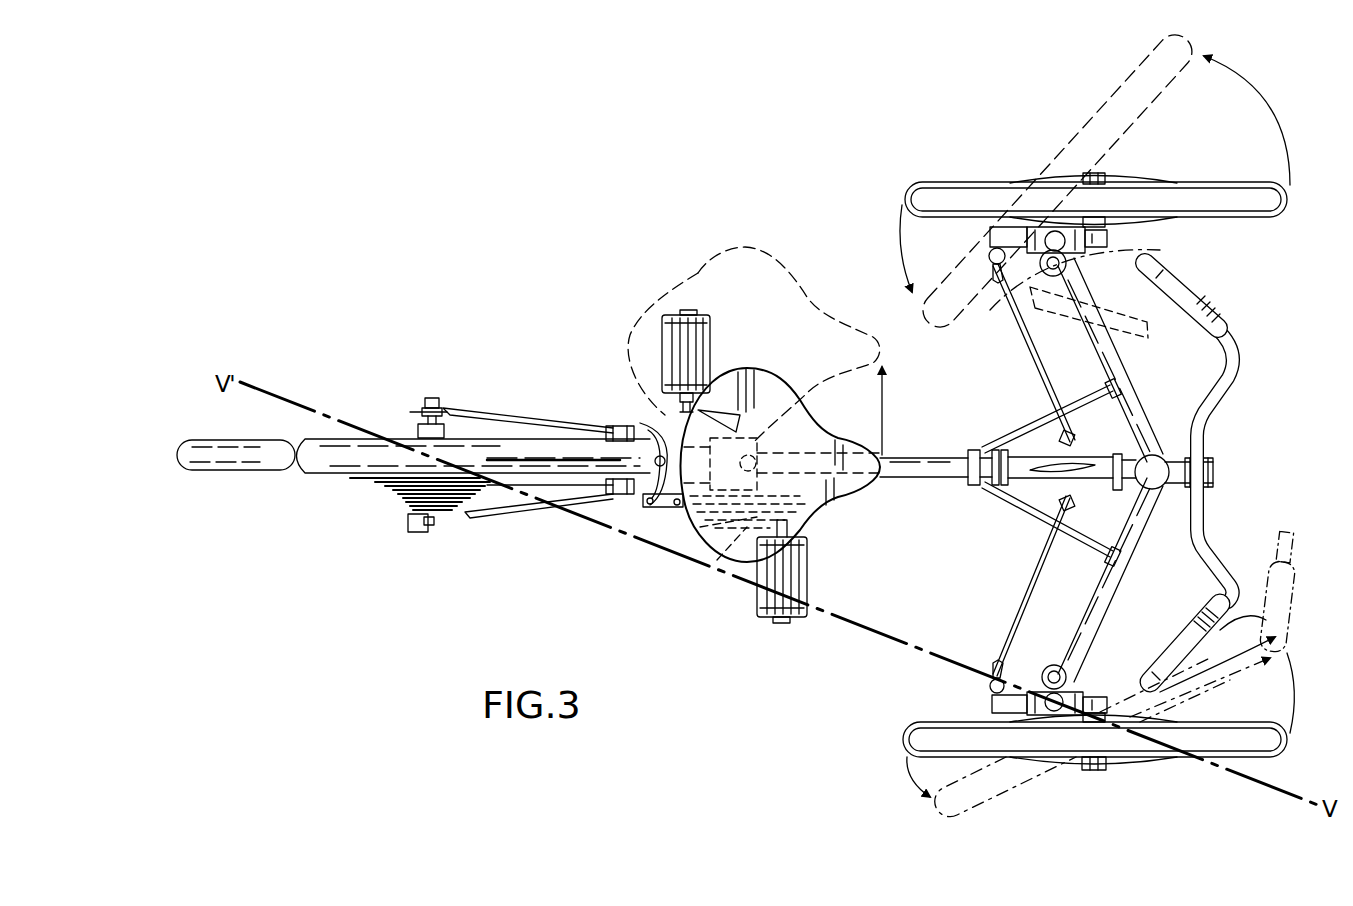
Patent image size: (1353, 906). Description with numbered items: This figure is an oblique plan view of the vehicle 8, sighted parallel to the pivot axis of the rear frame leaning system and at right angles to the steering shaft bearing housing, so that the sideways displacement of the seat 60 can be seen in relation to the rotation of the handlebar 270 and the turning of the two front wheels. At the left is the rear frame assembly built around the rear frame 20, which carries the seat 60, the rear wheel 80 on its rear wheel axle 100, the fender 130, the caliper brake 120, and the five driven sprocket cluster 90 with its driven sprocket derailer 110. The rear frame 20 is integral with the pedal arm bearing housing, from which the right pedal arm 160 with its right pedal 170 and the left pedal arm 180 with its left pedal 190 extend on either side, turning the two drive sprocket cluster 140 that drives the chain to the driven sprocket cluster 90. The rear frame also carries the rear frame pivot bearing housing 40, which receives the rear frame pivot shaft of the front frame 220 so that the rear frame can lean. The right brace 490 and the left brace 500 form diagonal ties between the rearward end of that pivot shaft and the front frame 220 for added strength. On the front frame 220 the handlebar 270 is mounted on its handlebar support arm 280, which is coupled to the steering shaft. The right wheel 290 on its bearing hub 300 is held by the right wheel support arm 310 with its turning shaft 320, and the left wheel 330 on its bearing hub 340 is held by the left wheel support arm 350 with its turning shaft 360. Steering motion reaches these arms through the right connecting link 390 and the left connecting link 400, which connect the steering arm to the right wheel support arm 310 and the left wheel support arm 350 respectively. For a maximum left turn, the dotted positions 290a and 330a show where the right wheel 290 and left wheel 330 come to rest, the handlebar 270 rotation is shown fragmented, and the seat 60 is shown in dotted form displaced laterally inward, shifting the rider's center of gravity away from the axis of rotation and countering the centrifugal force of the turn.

The vehicle 8 is at (688, 228).
The rear frame 20 is at (905, 480).
The rear frame pivot bearing housing 40 is at (1100, 458).
The seat 60 is at (840, 495).
The rear wheel 80 is at (265, 440).
The five driven sprocket cluster 90 is at (392, 490).
The rear wheel axle 100 is at (432, 402).
The driven sprocket derailer 110 is at (412, 530).
The caliper brake 120 is at (642, 422).
The fender 130 is at (318, 478).
The two drive sprocket cluster 140 is at (700, 512).
The right pedal arm 160 is at (706, 562).
The right pedal 170 is at (757, 600).
The left pedal arm 180 is at (678, 405).
The left pedal 190 is at (661, 340).
The front frame 220 is at (1095, 634).
The handlebar 270 is at (1204, 432).
The handlebar support arm 280 is at (1215, 473).
The right wheel 290 is at (920, 722).
The right wheel at maximum left turn position 290a is at (984, 808).
The bearing hub 300 is at (1085, 770).
The right wheel support arm 310 is at (992, 702).
The turning shaft 320 is at (1005, 660).
The left wheel 330 is at (962, 183).
The left wheel at maximum left turn position 330a is at (1092, 108).
The bearing hub 340 is at (1108, 176).
The left wheel support arm 350 is at (990, 238).
The turning shaft 360 is at (1020, 300).
The right connecting link 390 is at (1030, 590).
The left connecting link 400 is at (1032, 345).
The right brace 490 is at (1010, 512).
The left brace 500 is at (1030, 428).